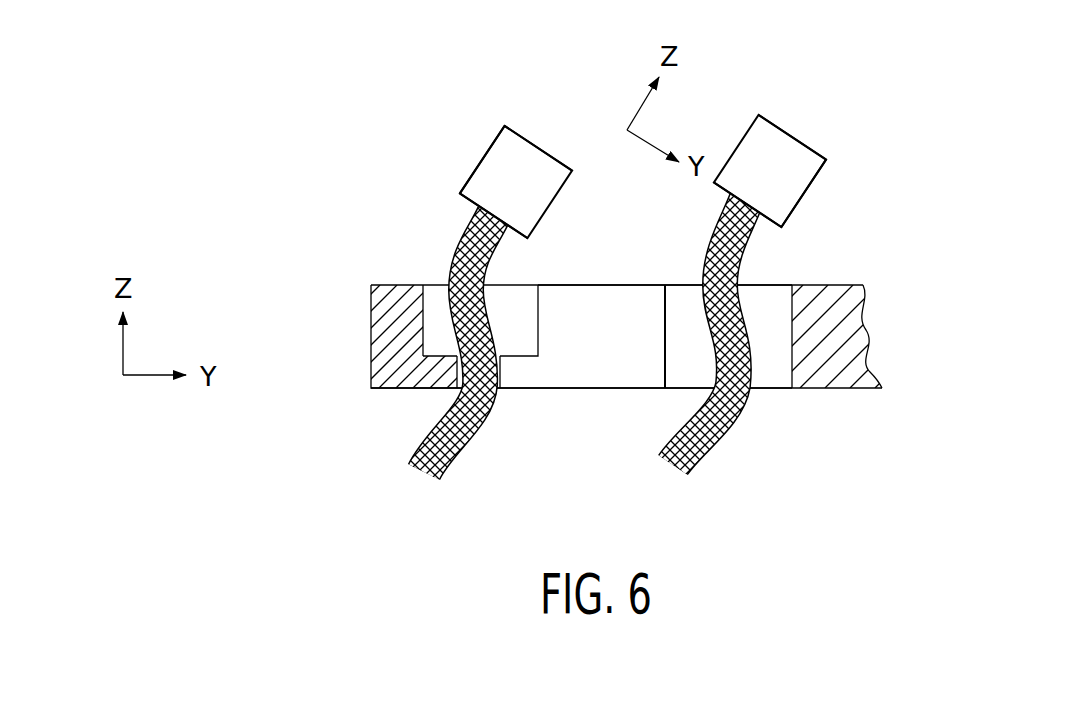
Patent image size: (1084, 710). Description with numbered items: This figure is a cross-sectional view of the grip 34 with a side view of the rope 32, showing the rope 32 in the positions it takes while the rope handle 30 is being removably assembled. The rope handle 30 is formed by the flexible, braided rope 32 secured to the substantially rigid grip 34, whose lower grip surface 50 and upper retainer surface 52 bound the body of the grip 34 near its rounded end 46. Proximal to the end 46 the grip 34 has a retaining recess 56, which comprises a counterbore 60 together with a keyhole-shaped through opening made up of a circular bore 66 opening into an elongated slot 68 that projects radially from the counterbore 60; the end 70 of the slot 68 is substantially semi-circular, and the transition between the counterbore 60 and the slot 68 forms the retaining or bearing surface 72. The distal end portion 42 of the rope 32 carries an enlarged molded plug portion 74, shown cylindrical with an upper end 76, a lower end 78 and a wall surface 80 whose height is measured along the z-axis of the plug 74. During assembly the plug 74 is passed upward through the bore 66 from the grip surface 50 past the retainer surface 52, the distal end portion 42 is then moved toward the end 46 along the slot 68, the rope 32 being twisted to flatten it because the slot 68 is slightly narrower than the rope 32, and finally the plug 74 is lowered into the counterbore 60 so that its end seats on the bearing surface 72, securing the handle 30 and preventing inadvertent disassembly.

The rope-type handle 30 is at (352, 188).
The flexible rope 32 is at (483, 415).
The grip 34 is at (664, 280).
The distal end portion 42 is at (506, 262).
The end of the grip 46 is at (356, 348).
The lower grip surface 50 is at (808, 396).
The upper retainer surface 52 is at (613, 280).
The retaining recess 56 is at (621, 348).
The counterbore 60 is at (433, 303).
The bore 66 is at (766, 300).
The slot 68 is at (573, 372).
The end of the slot 70 is at (500, 389).
The retaining surface 72 is at (446, 345).
The plug portion 74 is at (477, 168).
The upper end 76 is at (543, 151).
The lower end 78 is at (470, 200).
The wall surface 80 is at (527, 195).